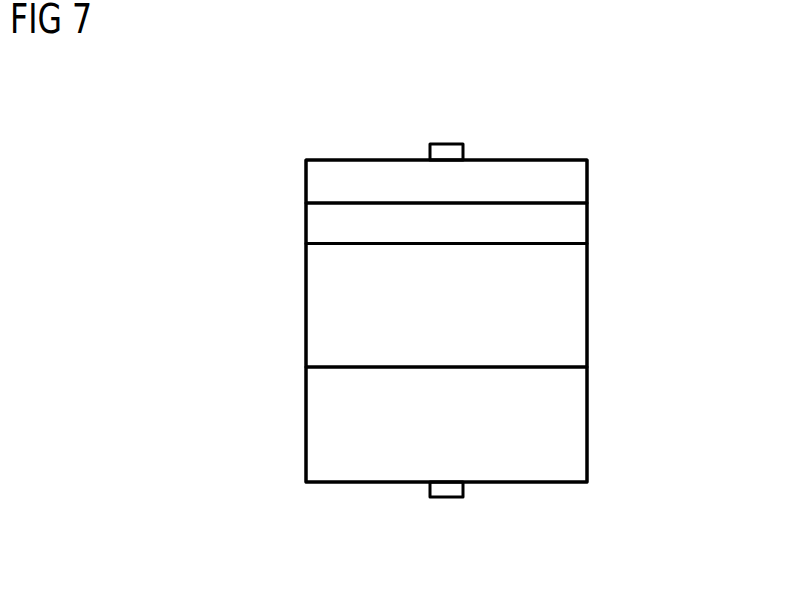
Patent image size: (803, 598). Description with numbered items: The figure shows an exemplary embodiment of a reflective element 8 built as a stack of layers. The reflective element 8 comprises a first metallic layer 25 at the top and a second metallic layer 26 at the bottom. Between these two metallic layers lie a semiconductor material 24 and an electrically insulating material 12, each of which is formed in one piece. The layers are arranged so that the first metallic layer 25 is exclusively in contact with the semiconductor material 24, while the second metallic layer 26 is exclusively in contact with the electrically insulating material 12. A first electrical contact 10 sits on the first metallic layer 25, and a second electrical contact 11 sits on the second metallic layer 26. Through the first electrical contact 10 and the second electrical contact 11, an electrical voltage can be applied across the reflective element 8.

The reflective element 8 is at (650, 102).
The first electrical contact 10 is at (450, 155).
The second electrical contact 11 is at (451, 497).
The electrically insulating material 12 is at (571, 310).
The semiconductor material 24 is at (570, 229).
The first metallic layer 25 is at (570, 188).
The second metallic layer 26 is at (571, 428).